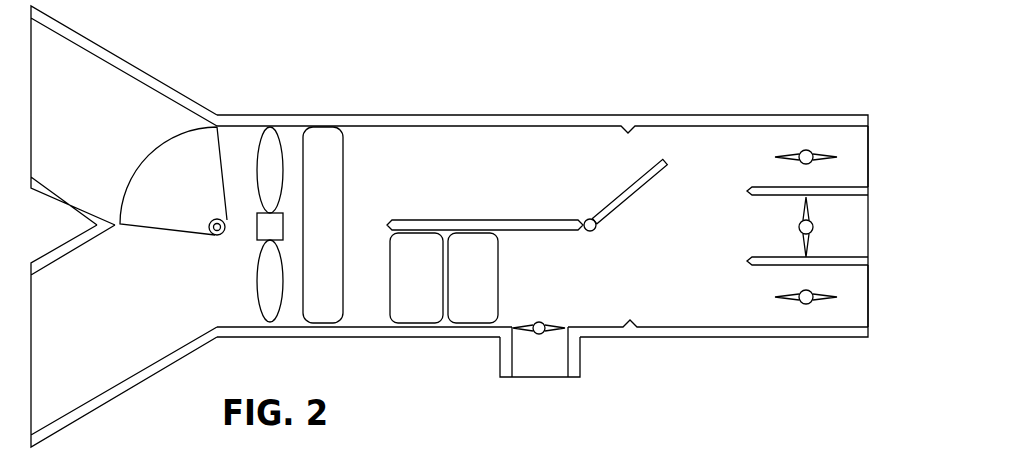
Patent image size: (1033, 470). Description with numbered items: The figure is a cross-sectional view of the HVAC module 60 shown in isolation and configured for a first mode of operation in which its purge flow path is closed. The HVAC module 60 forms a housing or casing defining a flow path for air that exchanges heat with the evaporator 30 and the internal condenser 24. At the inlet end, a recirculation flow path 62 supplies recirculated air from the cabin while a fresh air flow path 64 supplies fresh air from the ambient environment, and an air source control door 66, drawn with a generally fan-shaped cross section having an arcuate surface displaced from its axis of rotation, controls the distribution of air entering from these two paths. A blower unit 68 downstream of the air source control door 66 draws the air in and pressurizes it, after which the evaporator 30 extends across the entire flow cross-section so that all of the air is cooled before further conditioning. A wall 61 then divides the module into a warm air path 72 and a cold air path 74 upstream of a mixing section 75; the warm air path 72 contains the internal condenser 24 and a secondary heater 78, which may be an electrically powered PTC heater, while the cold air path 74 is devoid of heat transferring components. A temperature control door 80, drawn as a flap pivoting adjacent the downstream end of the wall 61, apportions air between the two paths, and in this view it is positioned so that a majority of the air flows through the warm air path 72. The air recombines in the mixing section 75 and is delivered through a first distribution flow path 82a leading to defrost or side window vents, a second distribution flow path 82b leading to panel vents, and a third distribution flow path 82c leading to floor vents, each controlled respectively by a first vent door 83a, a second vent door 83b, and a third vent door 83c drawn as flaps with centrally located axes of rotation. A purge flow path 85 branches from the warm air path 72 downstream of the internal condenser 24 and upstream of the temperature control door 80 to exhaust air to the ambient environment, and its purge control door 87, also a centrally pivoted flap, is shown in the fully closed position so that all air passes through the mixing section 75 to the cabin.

The HVAC module 60 is at (472, 111).
The wall 61 is at (470, 221).
The recirculation flow path 62 is at (72, 341).
The fresh air flow path 64 is at (72, 142).
The air source control door 66 is at (160, 233).
The blower unit 68 is at (257, 226).
The evaporator 30 is at (312, 235).
The internal condenser 24 is at (408, 292).
The secondary heater 78 is at (463, 292).
The cold air path 74 is at (528, 185).
The warm air path 72 is at (527, 285).
The mixing section 75 is at (698, 237).
The temperature control door 80 is at (612, 220).
The purge flow path 85 is at (538, 370).
The purge control door 87 is at (545, 332).
The first distribution flow path 82a is at (858, 155).
The second distribution flow path 82b is at (858, 225).
The third distribution flow path 82c is at (858, 298).
The first vent door 83a is at (807, 148).
The second vent door 83b is at (807, 220).
The third vent door 83c is at (807, 290).